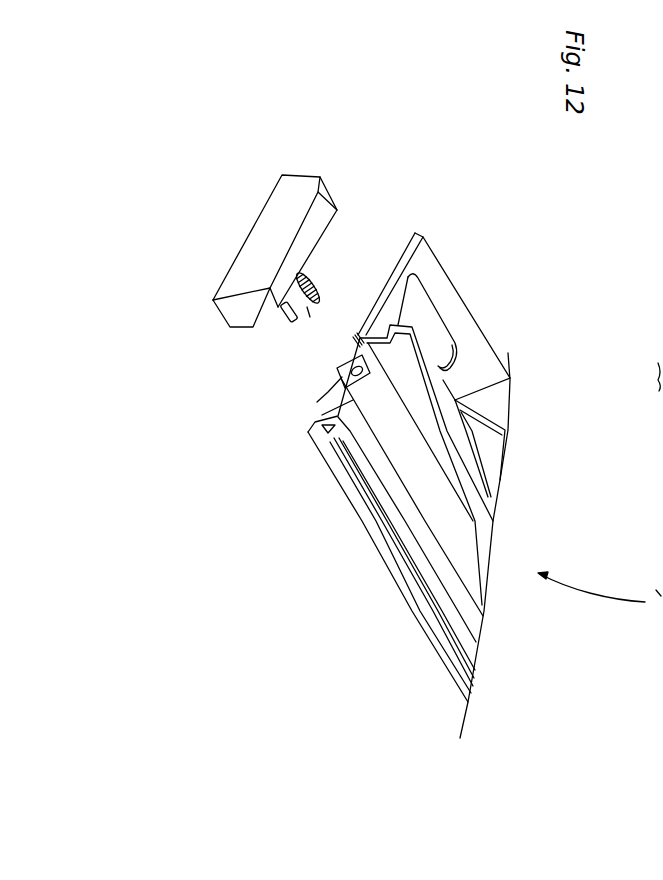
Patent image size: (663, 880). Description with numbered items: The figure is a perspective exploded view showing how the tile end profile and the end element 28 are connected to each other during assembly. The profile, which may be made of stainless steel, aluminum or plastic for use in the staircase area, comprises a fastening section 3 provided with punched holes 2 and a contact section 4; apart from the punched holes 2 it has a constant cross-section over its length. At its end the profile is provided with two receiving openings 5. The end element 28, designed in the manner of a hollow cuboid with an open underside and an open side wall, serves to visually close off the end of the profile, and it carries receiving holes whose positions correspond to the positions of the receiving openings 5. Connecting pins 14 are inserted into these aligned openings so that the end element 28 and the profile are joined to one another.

The punched holes 2 is at (425, 313).
The fastening section 3 is at (483, 353).
The contact section 4 is at (507, 381).
The receiving openings 5 is at (355, 335).
The connecting pins 14 is at (273, 329).
The end element 28 is at (230, 254).